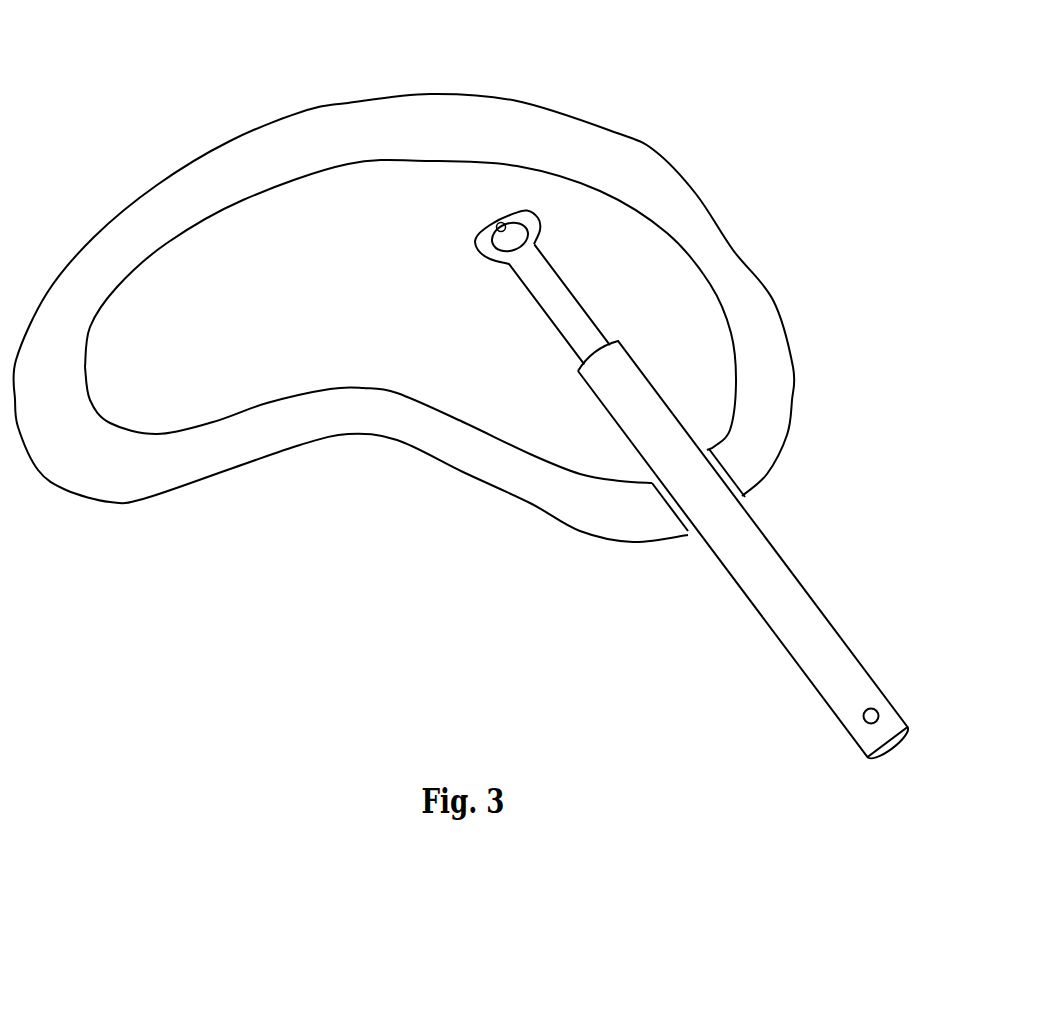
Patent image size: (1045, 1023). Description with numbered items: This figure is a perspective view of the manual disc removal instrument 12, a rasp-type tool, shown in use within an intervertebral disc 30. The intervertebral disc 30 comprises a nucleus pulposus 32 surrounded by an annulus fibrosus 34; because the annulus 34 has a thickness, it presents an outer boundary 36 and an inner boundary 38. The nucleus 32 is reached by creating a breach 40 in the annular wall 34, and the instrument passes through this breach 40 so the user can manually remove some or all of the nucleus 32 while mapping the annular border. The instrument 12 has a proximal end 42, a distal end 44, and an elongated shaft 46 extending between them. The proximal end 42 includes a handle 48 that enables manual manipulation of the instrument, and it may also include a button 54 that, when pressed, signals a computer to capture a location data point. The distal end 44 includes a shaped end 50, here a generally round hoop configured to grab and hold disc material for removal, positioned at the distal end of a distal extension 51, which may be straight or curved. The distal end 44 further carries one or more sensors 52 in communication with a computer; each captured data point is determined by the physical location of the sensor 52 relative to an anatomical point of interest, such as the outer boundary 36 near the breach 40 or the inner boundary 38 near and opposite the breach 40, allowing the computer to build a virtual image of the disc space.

The manual disc removal instrument 12 is at (472, 445).
The intervertebral disc 30 is at (416, 299).
The nucleus pulposus 32 is at (416, 299).
The annulus fibrosus 34 is at (307, 110).
The outer boundary 36 is at (147, 512).
The inner boundary 38 is at (211, 410).
The breach 40 is at (749, 504).
The proximal end 42 is at (673, 526).
The distal end 44 is at (601, 217).
The elongated shaft 46 is at (712, 552).
The handle 48 is at (755, 549).
The shaped end 50 is at (478, 250).
The distal extension 51 is at (535, 295).
The sensor 52 is at (497, 224).
The button 54 is at (877, 710).